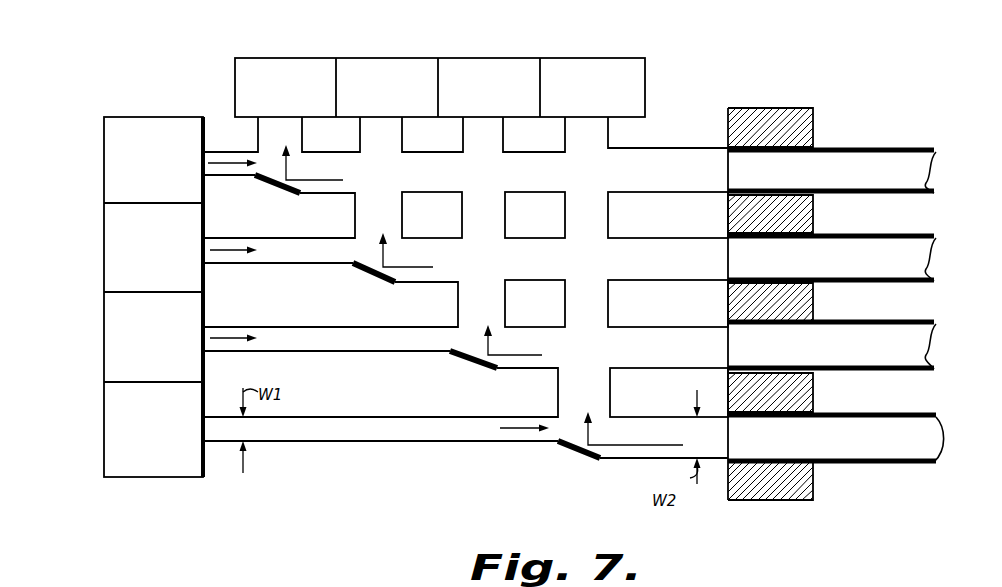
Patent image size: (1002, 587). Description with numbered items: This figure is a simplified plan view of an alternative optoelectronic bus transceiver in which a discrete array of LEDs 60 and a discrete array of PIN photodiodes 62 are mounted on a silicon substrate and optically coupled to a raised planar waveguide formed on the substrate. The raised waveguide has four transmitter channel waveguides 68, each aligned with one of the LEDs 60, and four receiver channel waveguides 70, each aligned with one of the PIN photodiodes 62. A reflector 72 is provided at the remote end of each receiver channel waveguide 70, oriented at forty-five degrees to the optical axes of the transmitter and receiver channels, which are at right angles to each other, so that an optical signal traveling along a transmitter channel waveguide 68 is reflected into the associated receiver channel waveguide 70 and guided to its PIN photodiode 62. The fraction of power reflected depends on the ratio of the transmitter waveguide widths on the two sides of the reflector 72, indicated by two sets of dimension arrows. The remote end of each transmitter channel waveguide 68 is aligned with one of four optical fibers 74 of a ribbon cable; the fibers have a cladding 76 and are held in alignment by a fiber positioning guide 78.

The LEDs 60 is at (132, 297).
The PIN photodiodes 62 is at (440, 68).
The transmitter channel waveguides 68 is at (465, 304).
The receiver channel waveguides 70 is at (515, 267).
The reflector 72 is at (430, 331).
The optical fibers 74 is at (832, 282).
The cladding 76 is at (953, 285).
The fiber positioning guide 78 is at (776, 112).